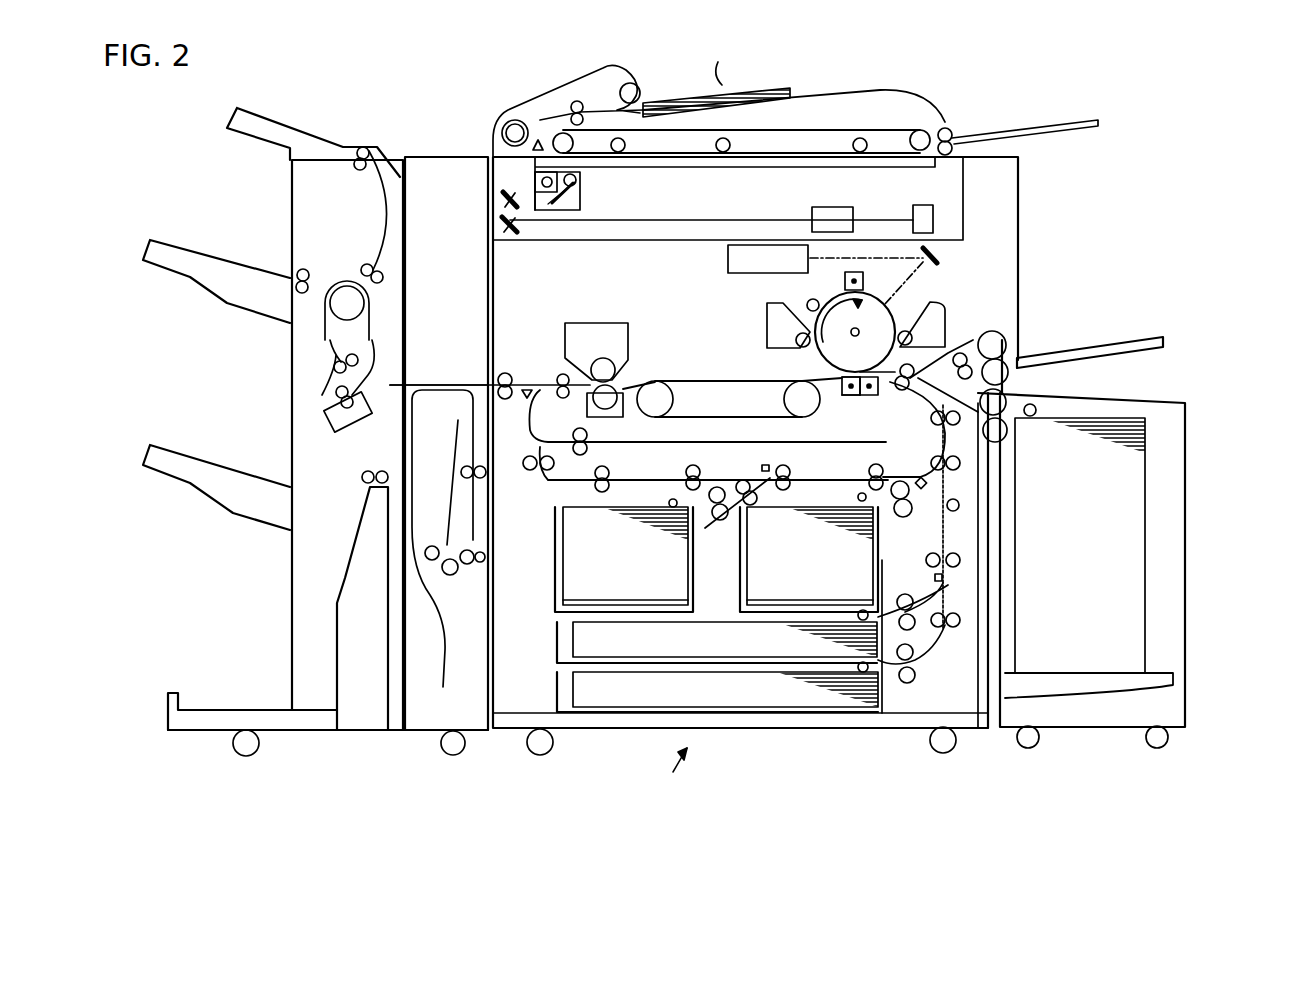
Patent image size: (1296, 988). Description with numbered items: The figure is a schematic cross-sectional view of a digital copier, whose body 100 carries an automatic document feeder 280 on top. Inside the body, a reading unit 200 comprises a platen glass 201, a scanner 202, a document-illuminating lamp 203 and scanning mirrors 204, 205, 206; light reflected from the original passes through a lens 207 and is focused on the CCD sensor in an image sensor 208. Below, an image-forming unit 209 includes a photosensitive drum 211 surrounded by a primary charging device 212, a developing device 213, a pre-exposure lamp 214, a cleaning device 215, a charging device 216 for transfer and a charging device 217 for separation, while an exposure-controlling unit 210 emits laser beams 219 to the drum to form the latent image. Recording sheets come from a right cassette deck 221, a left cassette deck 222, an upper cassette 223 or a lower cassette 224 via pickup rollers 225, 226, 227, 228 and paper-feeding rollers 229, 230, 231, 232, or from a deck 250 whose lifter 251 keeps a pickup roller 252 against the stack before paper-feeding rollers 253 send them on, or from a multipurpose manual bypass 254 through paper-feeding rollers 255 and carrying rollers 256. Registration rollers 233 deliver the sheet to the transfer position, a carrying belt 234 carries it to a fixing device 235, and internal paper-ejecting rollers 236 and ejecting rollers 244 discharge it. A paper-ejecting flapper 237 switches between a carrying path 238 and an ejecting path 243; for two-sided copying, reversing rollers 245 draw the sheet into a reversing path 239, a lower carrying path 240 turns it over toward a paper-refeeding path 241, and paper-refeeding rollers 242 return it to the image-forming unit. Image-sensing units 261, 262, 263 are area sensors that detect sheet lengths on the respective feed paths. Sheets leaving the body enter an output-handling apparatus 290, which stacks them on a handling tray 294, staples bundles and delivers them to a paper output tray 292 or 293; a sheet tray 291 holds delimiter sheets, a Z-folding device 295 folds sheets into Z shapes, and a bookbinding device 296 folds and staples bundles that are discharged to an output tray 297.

The body 100 is at (702, 838).
The reading unit 200 is at (963, 175).
The platen glass 201 is at (720, 160).
The scanner 202 is at (580, 202).
The document-illuminating lamp 203 is at (580, 175).
The scanning mirror 204 is at (570, 210).
The scanning mirror 205 is at (502, 197).
The scanning mirror 206 is at (502, 225).
The lens 207 is at (829, 207).
The image sensor 208 is at (920, 205).
The image-forming unit 209 is at (947, 353).
The exposure-controlling unit 210 is at (728, 258).
The photosensitive drum 211 is at (893, 300).
The primary charging device 212 is at (855, 270).
The developing device 213 is at (945, 305).
The pre-exposure lamp 214 is at (808, 302).
The cleaning device 215 is at (767, 322).
The charging device for transfer operation 216 is at (875, 397).
The charging device for separation 217 is at (845, 397).
The laser beams 219 is at (937, 255).
The right cassette deck 221 is at (867, 572).
The left cassette deck 222 is at (567, 565).
The upper cassette 223 is at (573, 637).
The lower cassette 224 is at (573, 690).
The pickup roller 225 is at (858, 496).
The pickup roller 226 is at (669, 502).
The pickup roller 227 is at (850, 610).
The pickup roller 228 is at (850, 667).
The paper-feeding rollers 229 is at (903, 517).
The paper-feeding rollers 230 is at (720, 520).
The paper-feeding rollers 231 is at (915, 640).
The paper-feeding rollers 232 is at (915, 683).
The registration rollers 233 is at (910, 387).
The carrying belt 234 is at (705, 381).
The fixing device 235 is at (610, 322).
The internal paper-ejecting rollers 236 is at (560, 373).
The paper-ejecting flapper 237 is at (518, 420).
The carrying path 238 is at (583, 405).
The reversing path 239 is at (680, 440).
The lower carrying path 240 is at (713, 470).
The paper-refeeding path 241 is at (814, 473).
The paper-refeeding rollers 242 is at (880, 469).
The ejecting path 243 is at (518, 385).
The ejecting rollers 244 is at (497, 375).
The reversing rollers 245 is at (590, 447).
The deck 250 is at (1185, 480).
The lifter 251 is at (1175, 676).
The pickup roller 252 is at (1035, 415).
The paper-feeding rollers 253 is at (1008, 437).
The multipurpose manual bypass 254 is at (1153, 337).
The paper-feeding rollers 255 is at (1010, 338).
The carrying rollers 256 is at (1005, 333).
The image-sensing unit 261 is at (942, 480).
The image-sensing unit 262 is at (780, 470).
The image-sensing unit 263 is at (942, 577).
The automatic document feeder 280 is at (826, 95).
The output-handling apparatus 290 is at (292, 180).
The sheet tray 291 is at (312, 130).
The paper output tray 292 is at (225, 258).
The paper output tray 293 is at (225, 465).
The handling tray 294 is at (335, 418).
The Z-folding device 295 is at (418, 702).
The bookbinding device 296 is at (345, 575).
The output tray 297 is at (223, 710).